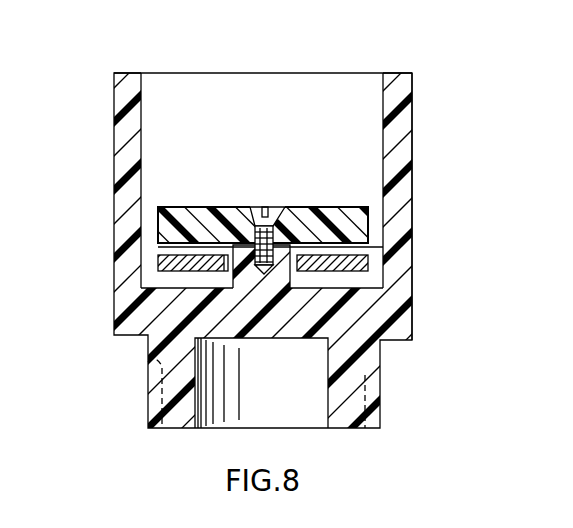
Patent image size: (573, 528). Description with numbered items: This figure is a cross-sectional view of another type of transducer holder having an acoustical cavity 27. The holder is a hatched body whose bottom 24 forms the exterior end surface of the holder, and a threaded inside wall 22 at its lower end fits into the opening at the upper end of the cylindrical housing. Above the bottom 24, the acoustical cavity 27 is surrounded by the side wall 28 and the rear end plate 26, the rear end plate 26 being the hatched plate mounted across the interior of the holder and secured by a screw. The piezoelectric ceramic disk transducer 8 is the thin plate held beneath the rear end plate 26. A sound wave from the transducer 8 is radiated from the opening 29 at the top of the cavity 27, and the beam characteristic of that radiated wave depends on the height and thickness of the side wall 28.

The transducer 8 is at (368, 268).
The threaded inside wall 22 is at (148, 387).
The bottom 24 is at (113, 313).
The rear end plate 26 is at (368, 230).
The acoustical cavity 27 is at (287, 148).
The side wall 28 is at (403, 153).
The opening 29 is at (290, 73).